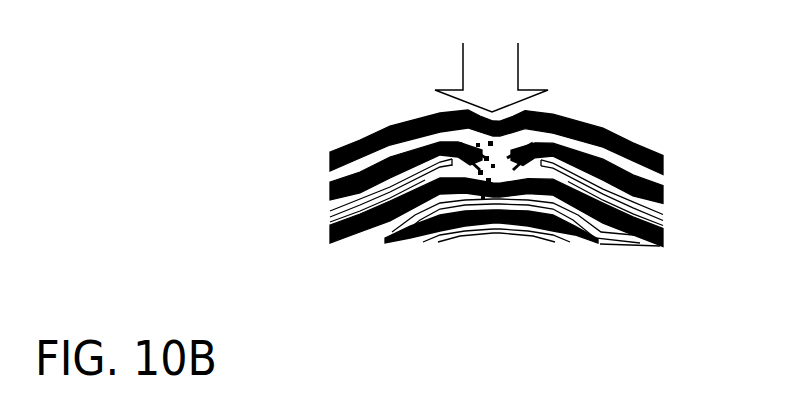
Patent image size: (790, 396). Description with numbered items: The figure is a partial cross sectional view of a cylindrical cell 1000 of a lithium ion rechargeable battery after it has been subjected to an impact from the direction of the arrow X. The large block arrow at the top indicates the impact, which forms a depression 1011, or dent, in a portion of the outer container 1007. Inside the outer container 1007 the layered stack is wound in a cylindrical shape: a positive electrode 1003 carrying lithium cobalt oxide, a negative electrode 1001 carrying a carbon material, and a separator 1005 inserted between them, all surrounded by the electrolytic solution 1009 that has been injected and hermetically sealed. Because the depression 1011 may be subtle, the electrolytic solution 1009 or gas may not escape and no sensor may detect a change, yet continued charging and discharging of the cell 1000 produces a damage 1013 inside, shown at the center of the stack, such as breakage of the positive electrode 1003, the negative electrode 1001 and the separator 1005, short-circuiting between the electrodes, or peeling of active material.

The cylindrical cell 1000 is at (395, 96).
The negative electrode 1001 is at (583, 240).
The positive electrode 1003 is at (653, 242).
The separator 1005 is at (547, 242).
The outer container 1007 is at (330, 161).
The electrolytic solution 1009 is at (330, 183).
The depression 1011 is at (549, 102).
The damage 1013 is at (485, 200).